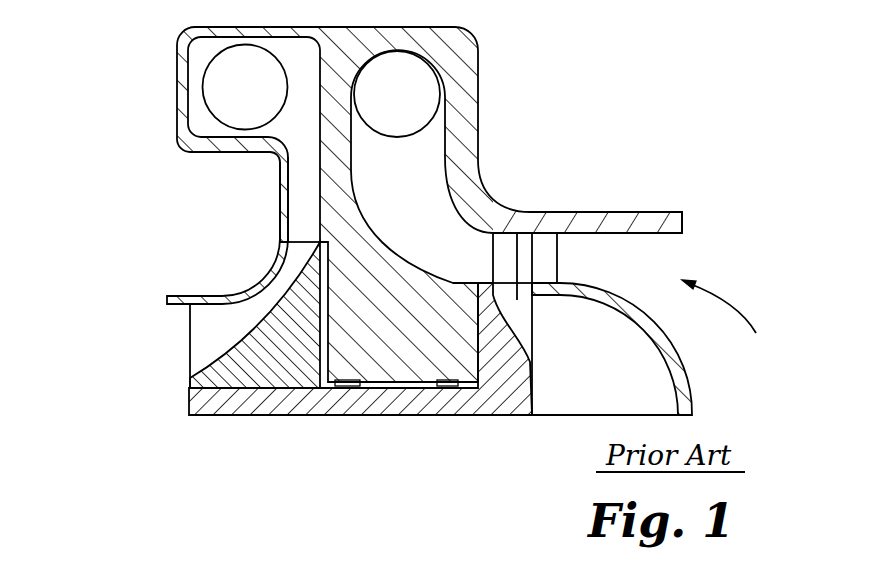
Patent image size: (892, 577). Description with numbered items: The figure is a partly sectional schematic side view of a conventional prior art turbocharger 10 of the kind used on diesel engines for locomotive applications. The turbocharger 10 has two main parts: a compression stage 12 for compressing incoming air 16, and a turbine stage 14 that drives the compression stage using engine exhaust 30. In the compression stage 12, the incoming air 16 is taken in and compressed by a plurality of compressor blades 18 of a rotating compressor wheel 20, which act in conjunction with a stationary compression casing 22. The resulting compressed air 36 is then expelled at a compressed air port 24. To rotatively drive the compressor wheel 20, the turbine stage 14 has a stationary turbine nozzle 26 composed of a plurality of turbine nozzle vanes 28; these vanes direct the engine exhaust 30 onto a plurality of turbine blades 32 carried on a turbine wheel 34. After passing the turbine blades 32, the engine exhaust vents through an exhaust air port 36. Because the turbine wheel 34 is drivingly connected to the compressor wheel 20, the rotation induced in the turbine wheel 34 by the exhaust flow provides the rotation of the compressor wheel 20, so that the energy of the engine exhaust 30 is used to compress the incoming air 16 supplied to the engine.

The turbocharger 10 is at (620, 131).
The compression stage 12 is at (257, 260).
The turbine stage 14 is at (530, 218).
The incoming air 16 is at (212, 334).
The compressor blades 18 is at (318, 243).
The compressor wheel 20 is at (303, 365).
The compression casing 22 is at (278, 190).
The compressed air port 24 is at (217, 92).
The turbine nozzle 26 is at (563, 252).
The turbine nozzle vanes 28 is at (557, 276).
The engine exhaust 30 is at (716, 292).
The turbine blades 32 is at (493, 253).
The turbine wheel 34 is at (510, 370).
The exhaust air port 36 is at (422, 92).